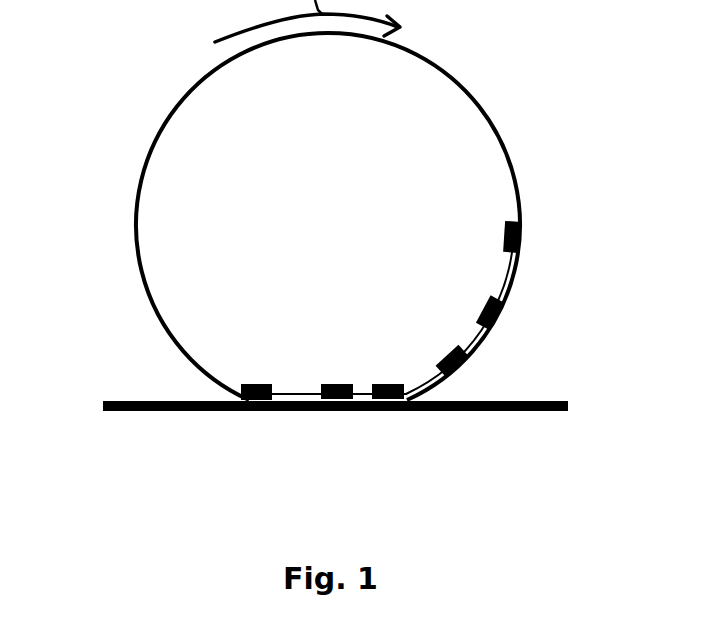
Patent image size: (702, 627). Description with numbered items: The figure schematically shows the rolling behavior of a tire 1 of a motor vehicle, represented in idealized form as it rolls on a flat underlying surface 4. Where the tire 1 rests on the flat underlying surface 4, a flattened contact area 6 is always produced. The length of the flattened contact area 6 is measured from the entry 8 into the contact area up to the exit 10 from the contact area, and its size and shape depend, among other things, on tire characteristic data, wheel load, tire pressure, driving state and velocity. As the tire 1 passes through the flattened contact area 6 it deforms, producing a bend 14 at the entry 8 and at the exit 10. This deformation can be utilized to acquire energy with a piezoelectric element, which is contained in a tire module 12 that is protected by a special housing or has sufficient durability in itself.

The tire 1 is at (150, 156).
The flat underlying surface 4 is at (104, 411).
The flattened contact area 6 is at (306, 411).
The entry into the contact area 8 is at (423, 411).
The exit from the contact area 10 is at (231, 411).
The tire module 12 is at (505, 240).
The bend 14 is at (424, 388).